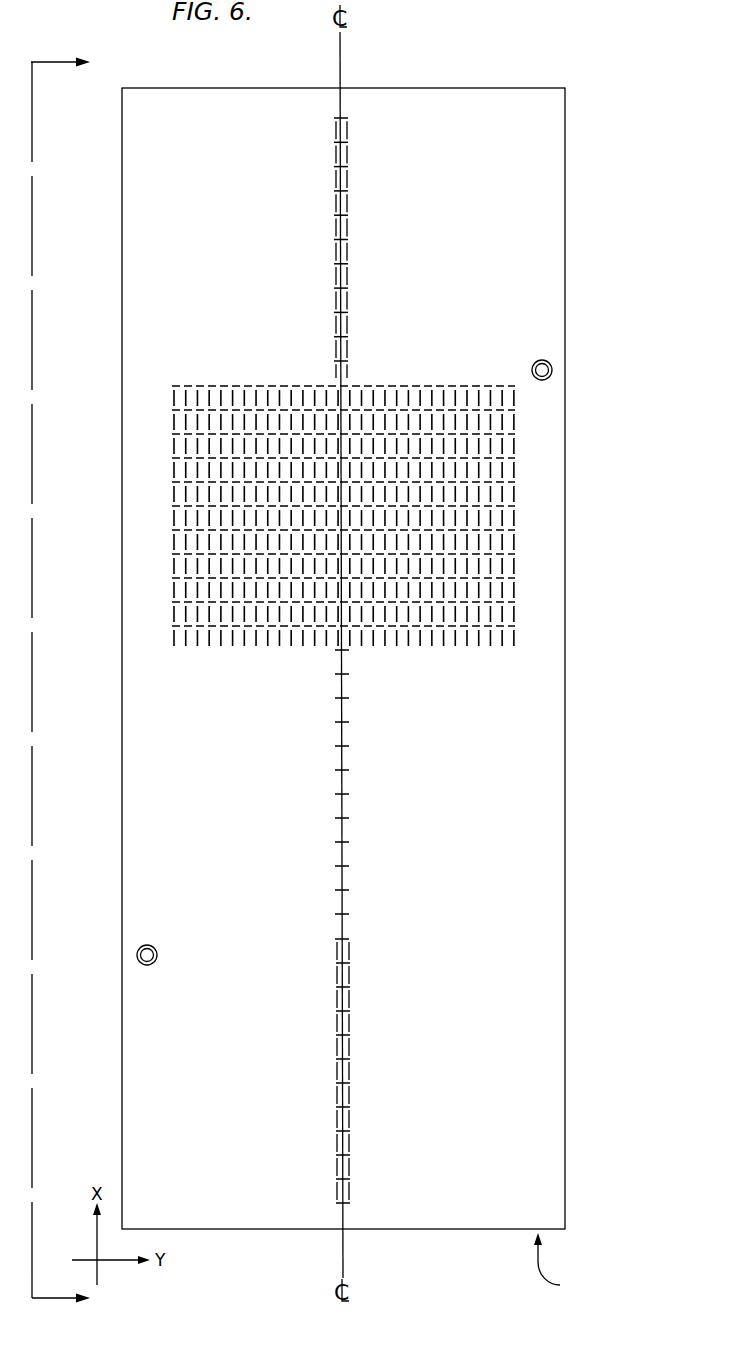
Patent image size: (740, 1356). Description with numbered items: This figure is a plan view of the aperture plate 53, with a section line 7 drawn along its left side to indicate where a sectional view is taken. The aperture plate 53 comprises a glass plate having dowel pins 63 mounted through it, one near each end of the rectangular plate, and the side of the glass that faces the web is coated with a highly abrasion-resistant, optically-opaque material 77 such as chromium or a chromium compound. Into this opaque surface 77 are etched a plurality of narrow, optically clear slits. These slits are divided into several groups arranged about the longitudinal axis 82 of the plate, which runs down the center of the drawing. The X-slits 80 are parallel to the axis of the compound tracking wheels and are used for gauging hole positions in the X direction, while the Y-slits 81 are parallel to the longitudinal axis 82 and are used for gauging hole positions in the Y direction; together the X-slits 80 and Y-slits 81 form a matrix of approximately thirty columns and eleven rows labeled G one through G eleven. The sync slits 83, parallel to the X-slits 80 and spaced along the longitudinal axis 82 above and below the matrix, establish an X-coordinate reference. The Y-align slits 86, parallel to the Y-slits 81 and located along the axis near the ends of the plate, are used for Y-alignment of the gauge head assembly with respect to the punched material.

The section line 7- 7 is at (60, 685).
The aperture plate 53 is at (560, 1264).
The dowel pins 63 is at (553, 365).
The optically-opaque material 77 is at (145, 1063).
The X-slits 80 is at (515, 386).
The Y-slits 81 is at (515, 522).
The longitudinal axis 82 is at (342, 68).
The sync slits 83 is at (349, 120).
The Y-align slits 86 is at (336, 180).